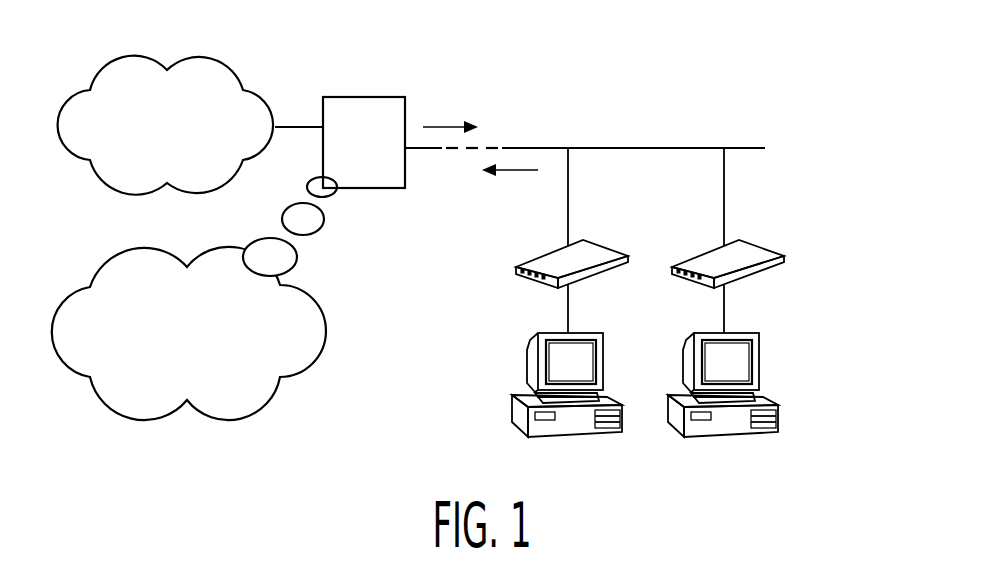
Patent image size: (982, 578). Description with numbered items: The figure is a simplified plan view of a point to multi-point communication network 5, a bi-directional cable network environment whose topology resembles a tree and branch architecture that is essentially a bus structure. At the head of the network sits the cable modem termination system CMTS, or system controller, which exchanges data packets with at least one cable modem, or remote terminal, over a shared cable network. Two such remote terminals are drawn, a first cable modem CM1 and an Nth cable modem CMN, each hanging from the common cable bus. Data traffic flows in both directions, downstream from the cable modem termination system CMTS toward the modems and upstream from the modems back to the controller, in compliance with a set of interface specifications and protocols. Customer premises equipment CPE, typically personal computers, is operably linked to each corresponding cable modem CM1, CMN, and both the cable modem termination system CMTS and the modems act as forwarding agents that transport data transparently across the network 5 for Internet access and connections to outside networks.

The network 5 is at (653, 53).
The cable modem termination system CMTS is at (340, 142).
The cable modem CM1 is at (515, 265).
The cable modem CMN is at (785, 258).
The customer premises equipment CPE is at (513, 410).